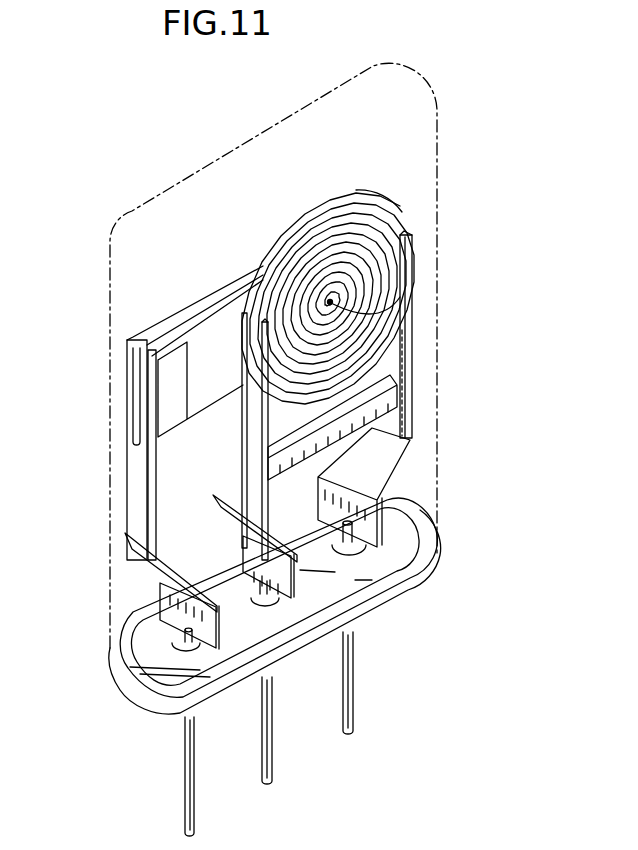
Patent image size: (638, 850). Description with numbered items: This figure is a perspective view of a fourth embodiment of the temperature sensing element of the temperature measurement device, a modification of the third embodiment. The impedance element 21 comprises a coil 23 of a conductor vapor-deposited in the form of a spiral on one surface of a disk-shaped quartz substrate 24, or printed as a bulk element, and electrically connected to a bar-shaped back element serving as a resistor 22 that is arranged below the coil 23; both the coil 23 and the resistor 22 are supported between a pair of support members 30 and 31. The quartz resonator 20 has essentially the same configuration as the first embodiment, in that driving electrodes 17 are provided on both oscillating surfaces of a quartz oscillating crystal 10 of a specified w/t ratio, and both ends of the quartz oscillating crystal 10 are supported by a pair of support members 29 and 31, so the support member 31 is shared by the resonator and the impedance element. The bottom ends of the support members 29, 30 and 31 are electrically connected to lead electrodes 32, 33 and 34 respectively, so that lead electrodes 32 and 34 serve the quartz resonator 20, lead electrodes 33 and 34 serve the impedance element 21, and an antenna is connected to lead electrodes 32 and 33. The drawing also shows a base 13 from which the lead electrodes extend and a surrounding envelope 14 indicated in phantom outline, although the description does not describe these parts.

The quartz oscillating crystal 10 is at (214, 272).
The base 13 is at (117, 694).
The envelope 14 is at (437, 130).
The driving electrodes 17 is at (203, 348).
The quartz resonator 20 is at (182, 434).
The impedance element 21 is at (428, 329).
The resistor 22 is at (405, 455).
The coil 23 is at (325, 215).
The quartz substrate 24 is at (392, 207).
The support member 29 is at (130, 522).
The support member 30 is at (256, 446).
The support member 31 is at (414, 362).
The lead electrode 32 is at (196, 788).
The lead electrode 33 is at (271, 737).
The lead electrode 34 is at (355, 693).